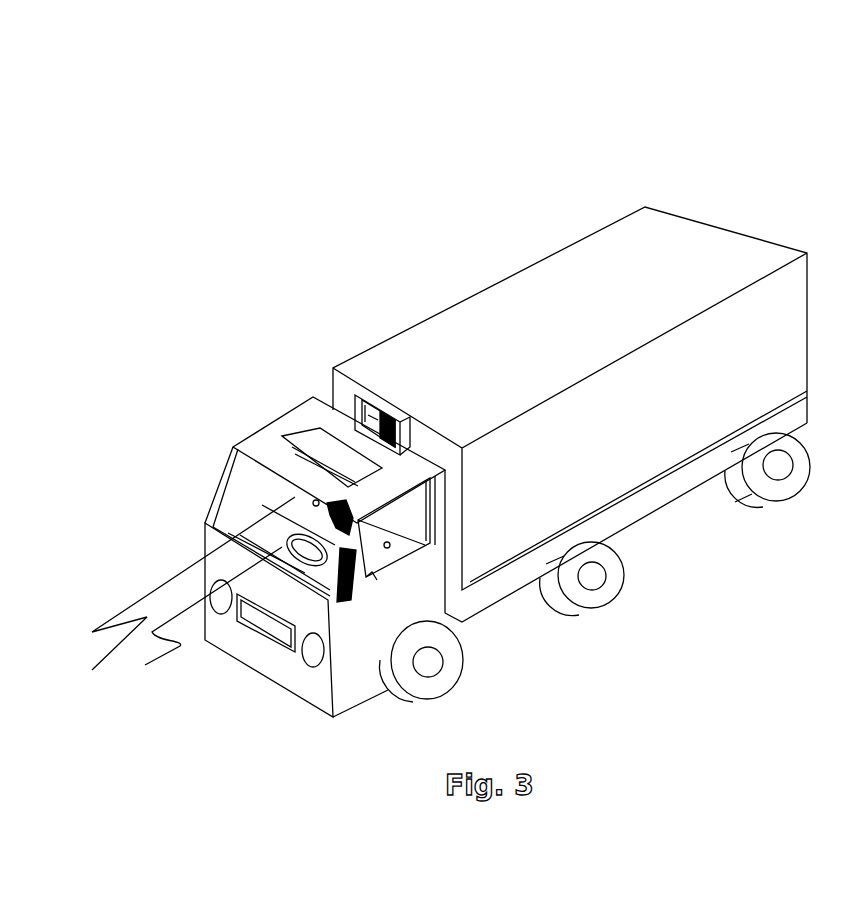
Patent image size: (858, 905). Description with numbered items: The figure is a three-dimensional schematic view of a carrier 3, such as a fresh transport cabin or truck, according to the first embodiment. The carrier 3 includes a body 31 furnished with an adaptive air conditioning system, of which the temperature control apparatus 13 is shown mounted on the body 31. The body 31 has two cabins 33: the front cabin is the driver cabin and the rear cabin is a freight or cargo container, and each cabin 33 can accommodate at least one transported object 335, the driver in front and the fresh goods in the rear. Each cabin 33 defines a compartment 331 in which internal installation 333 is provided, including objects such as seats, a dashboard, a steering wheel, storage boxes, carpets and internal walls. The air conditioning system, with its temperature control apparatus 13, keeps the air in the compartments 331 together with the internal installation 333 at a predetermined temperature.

The carrier 3 is at (500, 130).
The temperature control apparatus 13 is at (383, 397).
The body 31 is at (294, 378).
The cabin 33 is at (400, 500).
The compartment 331 is at (262, 528).
The internal installation 333 is at (313, 582).
The transported object 335 is at (367, 577).